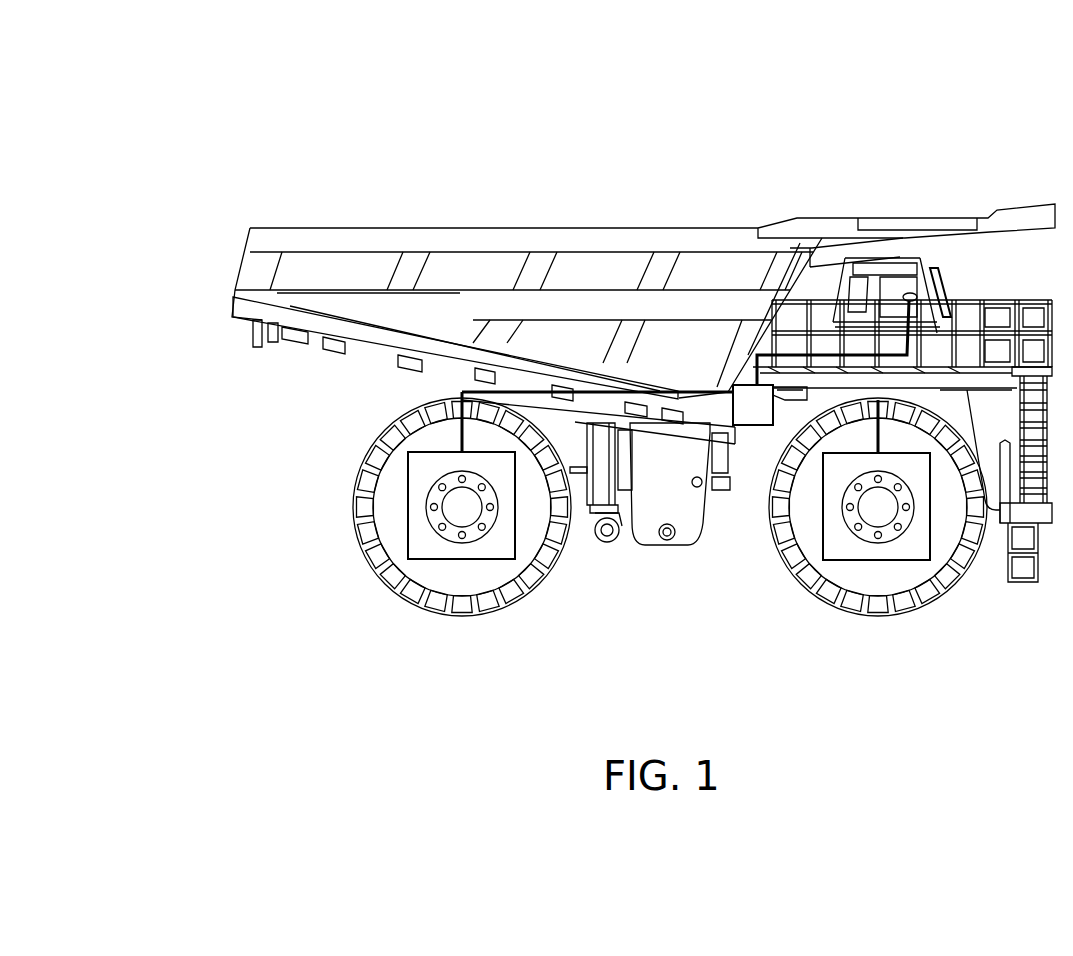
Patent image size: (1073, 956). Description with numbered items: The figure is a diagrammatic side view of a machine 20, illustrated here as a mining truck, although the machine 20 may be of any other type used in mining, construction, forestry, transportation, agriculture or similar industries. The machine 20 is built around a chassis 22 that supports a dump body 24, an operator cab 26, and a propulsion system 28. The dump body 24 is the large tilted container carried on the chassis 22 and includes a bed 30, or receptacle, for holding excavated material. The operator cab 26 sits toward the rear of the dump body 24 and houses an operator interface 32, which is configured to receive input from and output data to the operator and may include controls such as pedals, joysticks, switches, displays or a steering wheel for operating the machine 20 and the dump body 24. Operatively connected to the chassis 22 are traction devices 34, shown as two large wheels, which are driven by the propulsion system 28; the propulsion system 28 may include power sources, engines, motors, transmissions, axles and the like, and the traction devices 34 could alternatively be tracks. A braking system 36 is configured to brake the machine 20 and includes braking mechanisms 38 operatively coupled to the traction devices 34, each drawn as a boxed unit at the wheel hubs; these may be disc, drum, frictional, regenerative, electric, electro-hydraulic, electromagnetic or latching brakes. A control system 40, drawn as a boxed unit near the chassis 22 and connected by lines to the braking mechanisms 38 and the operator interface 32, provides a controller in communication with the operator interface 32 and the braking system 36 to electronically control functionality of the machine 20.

The machine 20 is at (776, 160).
The chassis 22 is at (757, 467).
The dump body 24 is at (257, 201).
The operator cab 26 is at (924, 268).
The propulsion system 28 is at (682, 461).
The bed 30 is at (315, 299).
The operator interface 32 is at (913, 301).
The traction devices 34 is at (401, 591).
The braking system 36 is at (406, 513).
The braking mechanisms 38 is at (512, 476).
The control system 40 is at (765, 416).